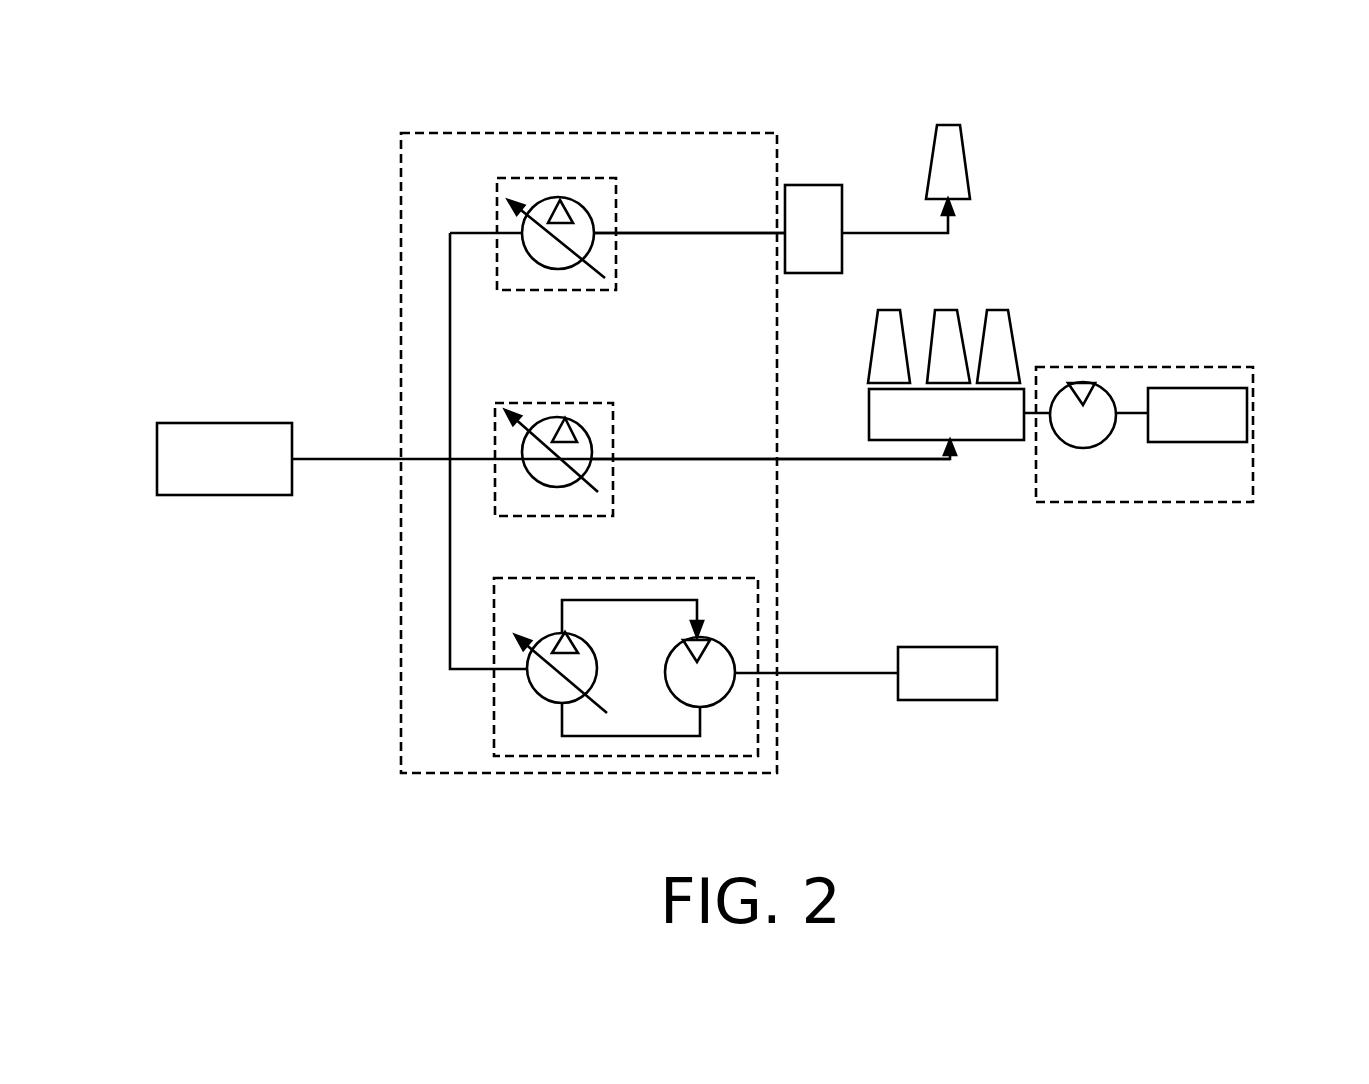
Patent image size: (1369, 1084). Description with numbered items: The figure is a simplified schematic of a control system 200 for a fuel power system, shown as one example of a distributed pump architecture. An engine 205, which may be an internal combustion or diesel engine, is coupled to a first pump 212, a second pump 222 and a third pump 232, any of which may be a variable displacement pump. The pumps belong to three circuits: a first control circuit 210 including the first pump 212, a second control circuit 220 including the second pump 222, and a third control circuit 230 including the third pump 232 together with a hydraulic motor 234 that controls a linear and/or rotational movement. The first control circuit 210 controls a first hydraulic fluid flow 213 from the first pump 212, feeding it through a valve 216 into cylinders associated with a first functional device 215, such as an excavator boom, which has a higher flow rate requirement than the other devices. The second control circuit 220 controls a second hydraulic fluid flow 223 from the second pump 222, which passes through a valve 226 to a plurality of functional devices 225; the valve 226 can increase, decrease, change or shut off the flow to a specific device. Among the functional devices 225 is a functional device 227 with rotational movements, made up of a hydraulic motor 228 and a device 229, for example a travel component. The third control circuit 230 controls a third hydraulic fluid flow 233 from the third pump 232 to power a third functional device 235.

The control system 200 is at (388, 218).
The engine 205 is at (157, 460).
The first control circuit 210 is at (562, 175).
The first pump 212 is at (523, 238).
The first hydraulic fluid flow 213 is at (692, 233).
The first functional device 215 is at (950, 125).
The valve 216 is at (815, 185).
The second control circuit 220 is at (568, 400).
The second pump 222 is at (587, 472).
The second hydraulic fluid flow 223 is at (707, 459).
The second functional device 225 is at (1000, 310).
The valve 226 is at (1000, 440).
The functional device 227 is at (1253, 342).
The hydraulic motor 228 is at (1083, 448).
The device 229 is at (1248, 418).
The third control circuit 230 is at (762, 613).
The third pump 232 is at (527, 672).
The third hydraulic fluid flow 233 is at (815, 673).
The hydraulic motor 234 is at (723, 700).
The third functional device 235 is at (997, 673).